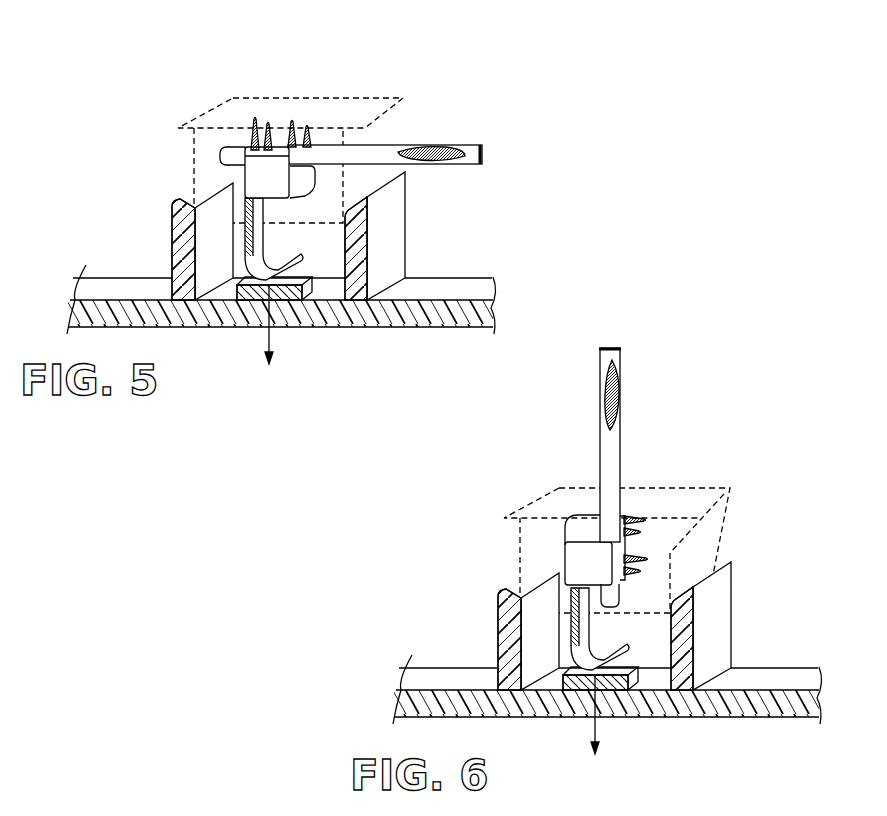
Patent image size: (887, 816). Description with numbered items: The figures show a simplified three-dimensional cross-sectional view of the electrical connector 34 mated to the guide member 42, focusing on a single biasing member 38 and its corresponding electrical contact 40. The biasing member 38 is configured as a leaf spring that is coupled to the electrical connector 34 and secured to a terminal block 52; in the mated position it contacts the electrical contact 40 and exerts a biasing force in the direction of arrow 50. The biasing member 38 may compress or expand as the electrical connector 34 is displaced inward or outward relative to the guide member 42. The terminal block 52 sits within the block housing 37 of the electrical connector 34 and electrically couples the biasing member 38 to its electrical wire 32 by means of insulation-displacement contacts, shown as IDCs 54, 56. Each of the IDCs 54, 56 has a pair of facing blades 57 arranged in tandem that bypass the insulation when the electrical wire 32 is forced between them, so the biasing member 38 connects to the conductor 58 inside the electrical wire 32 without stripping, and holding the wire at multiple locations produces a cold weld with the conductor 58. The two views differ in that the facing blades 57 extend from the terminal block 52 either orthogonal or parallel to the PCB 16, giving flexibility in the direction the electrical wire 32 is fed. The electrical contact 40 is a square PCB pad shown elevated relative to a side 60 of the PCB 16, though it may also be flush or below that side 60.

In FIG. 5, the PCB 16 is at (407, 341).
In FIG. 6, the PCB 16 is at (737, 731).
In FIG. 5, the electrical wire 32 is at (458, 165).
In FIG. 6, the electrical wire 32 is at (621, 357).
In FIG. 5, the electrical connector 34 is at (223, 93).
In FIG. 6, the electrical connector 34 is at (509, 487).
In FIG. 5, the block housing 37 is at (290, 106).
In FIG. 6, the block housing 37 is at (633, 492).
In FIG. 5, the biasing member 38 is at (245, 258).
In FIG. 6, the biasing member 38 is at (572, 640).
In FIG. 5, the electrical contact 40 is at (293, 300).
In FIG. 6, the electrical contact 40 is at (619, 690).
In FIG. 5, the guide member 42 is at (176, 220).
In FIG. 6, the guide member 42 is at (498, 612).
In FIG. 5, the arrow 50 is at (268, 333).
In FIG. 6, the arrow 50 is at (594, 725).
In FIG. 5, the terminal block 52 is at (252, 183).
In FIG. 6, the terminal block 52 is at (573, 553).
In FIG. 5, the insulation-displacement contact 54 is at (258, 108).
In FIG. 6, the insulation-displacement contact 54 is at (660, 527).
In FIG. 5, the insulation-displacement contact 56 is at (306, 106).
In FIG. 6, the insulation-displacement contact 56 is at (660, 564).
In FIG. 5, the facing blades 57 is at (250, 146).
In FIG. 6, the facing blades 57 is at (634, 517).
In FIG. 5, the conductor 58 is at (438, 148).
In FIG. 6, the conductor 58 is at (621, 397).
In FIG. 5, the side 60 is at (467, 288).
In FIG. 6, the side 60 is at (778, 680).